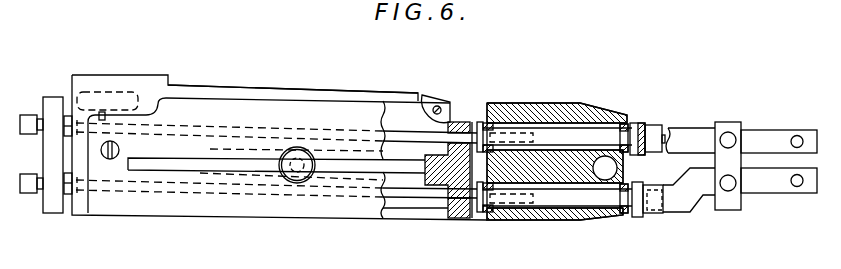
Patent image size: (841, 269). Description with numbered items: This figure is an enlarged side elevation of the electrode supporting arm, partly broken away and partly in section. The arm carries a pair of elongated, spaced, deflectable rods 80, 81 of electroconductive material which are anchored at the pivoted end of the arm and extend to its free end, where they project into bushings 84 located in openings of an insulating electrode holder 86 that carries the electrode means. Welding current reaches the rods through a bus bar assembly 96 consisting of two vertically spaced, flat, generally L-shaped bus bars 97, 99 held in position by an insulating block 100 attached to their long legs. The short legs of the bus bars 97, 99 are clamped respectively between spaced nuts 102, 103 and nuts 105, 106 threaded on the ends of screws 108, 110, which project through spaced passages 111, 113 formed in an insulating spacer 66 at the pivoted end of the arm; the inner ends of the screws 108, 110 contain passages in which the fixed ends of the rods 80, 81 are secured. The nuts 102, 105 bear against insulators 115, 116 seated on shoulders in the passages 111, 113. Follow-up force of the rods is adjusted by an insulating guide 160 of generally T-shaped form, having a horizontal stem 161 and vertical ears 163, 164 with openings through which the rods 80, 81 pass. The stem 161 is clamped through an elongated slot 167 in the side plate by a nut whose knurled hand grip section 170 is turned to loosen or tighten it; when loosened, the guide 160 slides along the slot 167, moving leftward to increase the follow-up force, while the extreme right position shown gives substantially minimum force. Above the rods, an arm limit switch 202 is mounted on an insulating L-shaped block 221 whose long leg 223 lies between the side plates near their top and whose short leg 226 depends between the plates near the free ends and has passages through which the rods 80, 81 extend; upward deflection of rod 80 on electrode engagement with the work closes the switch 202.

The insulating spacer 66 is at (510, 104).
The deflectable rod 80 is at (363, 130).
The deflectable rod 81 is at (345, 200).
The bushing 84 is at (25, 178).
The insulating electrode holder 86 is at (53, 100).
The bus bar assembly 96 is at (671, 124).
The bus bar 97 is at (778, 130).
The bus bar 99 is at (768, 194).
The insulating block 100 is at (733, 122).
The nut 102 is at (638, 124).
The nut 103 is at (653, 152).
The nut 105 is at (637, 218).
The nut 106 is at (656, 216).
The screw 108 is at (583, 108).
The screw 110 is at (562, 200).
The passage 111 is at (573, 131).
The passage 113 is at (527, 220).
The insulator 115 is at (622, 123).
The insulator 116 is at (622, 216).
The insulating guide 160 is at (423, 94).
The stem 161 is at (437, 180).
The ear 163 is at (461, 121).
The ear 164 is at (455, 219).
The elongated slot 167 is at (181, 171).
The knurled hand grip section 170 is at (295, 178).
The arm limit switch 202 is at (107, 97).
The insulating L-shaped block 221 is at (221, 86).
The long leg 223 is at (283, 92).
The short leg 226 is at (83, 208).